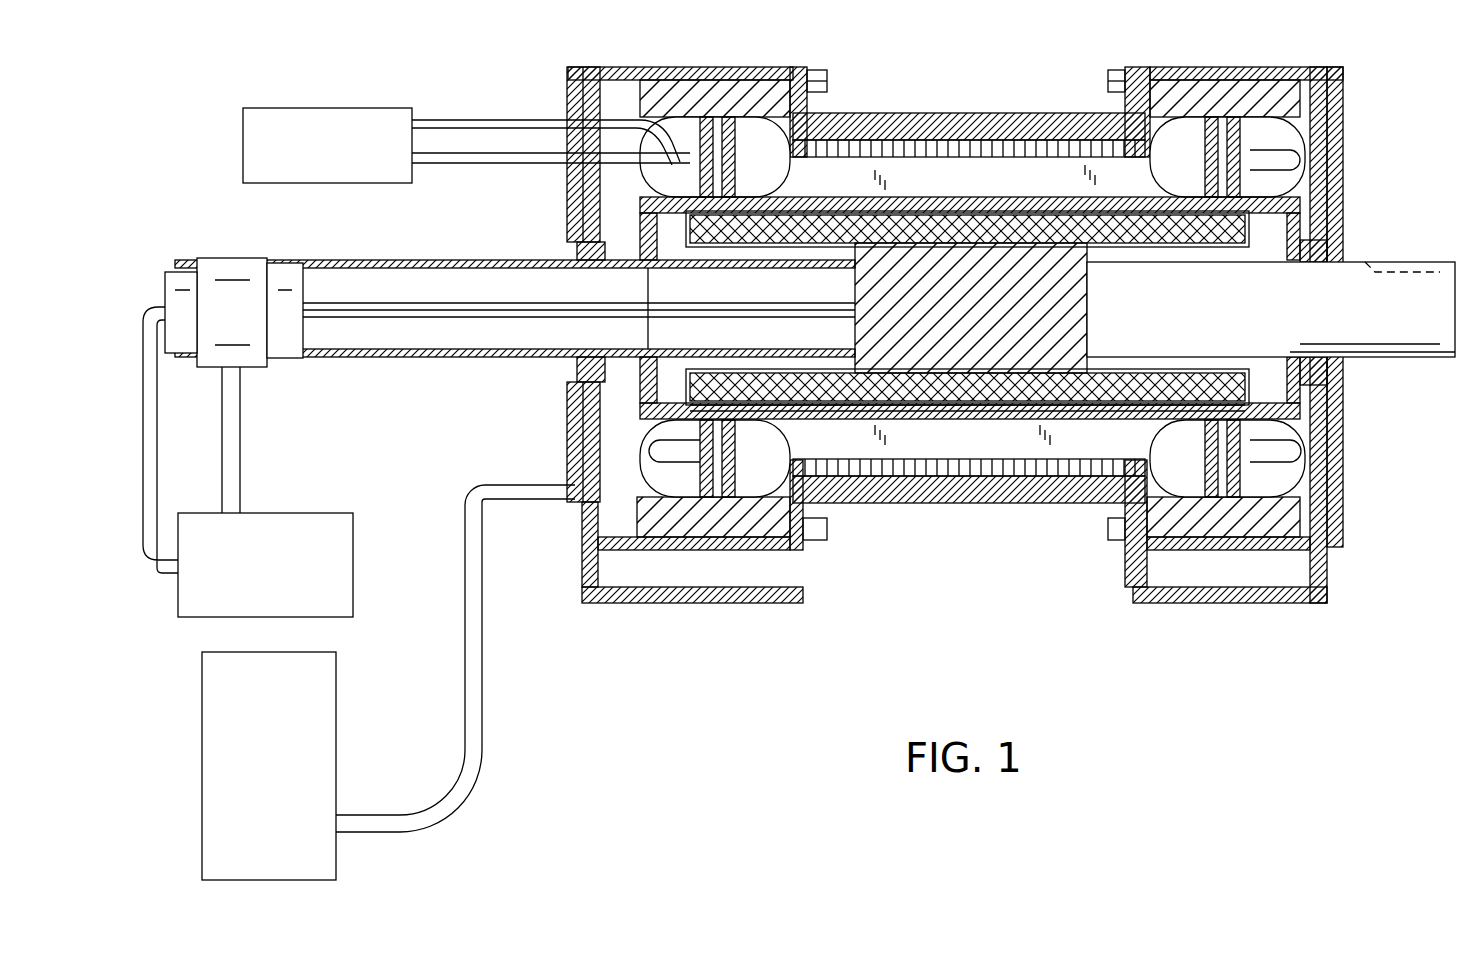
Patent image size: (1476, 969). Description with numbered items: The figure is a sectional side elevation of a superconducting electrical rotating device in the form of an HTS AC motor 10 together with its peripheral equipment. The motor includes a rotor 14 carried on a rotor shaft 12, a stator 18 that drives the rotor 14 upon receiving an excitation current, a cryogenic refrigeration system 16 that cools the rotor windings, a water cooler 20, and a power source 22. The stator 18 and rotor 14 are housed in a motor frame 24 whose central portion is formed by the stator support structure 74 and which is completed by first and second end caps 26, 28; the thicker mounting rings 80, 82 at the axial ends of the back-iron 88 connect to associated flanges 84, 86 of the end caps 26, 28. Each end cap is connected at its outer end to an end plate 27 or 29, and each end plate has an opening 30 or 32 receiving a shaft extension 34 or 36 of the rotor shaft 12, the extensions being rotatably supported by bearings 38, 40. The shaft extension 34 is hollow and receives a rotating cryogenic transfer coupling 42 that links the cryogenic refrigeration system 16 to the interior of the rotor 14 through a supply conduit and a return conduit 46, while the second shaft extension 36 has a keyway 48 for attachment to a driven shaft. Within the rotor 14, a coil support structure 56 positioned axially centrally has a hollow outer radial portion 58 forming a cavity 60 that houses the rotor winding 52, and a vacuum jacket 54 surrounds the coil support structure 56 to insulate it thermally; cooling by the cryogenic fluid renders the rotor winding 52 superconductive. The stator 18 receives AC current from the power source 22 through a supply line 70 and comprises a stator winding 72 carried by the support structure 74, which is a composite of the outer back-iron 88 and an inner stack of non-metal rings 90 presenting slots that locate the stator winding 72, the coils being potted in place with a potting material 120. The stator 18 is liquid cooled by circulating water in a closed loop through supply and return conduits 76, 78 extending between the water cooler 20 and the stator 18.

The HTS AC motor 10 is at (1017, 48).
The rotor shaft 12 is at (435, 378).
The rotor 14 is at (1030, 194).
The cryogenic refrigeration system 16 is at (358, 565).
The stator 18 is at (898, 134).
The water cooler 20 is at (337, 105).
The power source 22 is at (340, 708).
The motor frame 24 is at (640, 62).
The first end cap 26 is at (688, 65).
The first end plate 27 is at (566, 90).
The second end cap 28 is at (1232, 65).
The second end plate 29 is at (1345, 115).
The opening 30 is at (578, 258).
The opening 32 is at (1335, 352).
The shaft extension 34 is at (360, 260).
The second shaft extension 36 is at (1430, 358).
The bearing 38 is at (577, 395).
The bearing 40 is at (1330, 255).
The rotating cryogenic transfer coupling 42 is at (235, 272).
The return conduit 46 is at (240, 440).
The keyway 48 is at (1430, 265).
The rotor winding 52 is at (1235, 240).
The vacuum jacket 54 is at (933, 407).
The coil support structure 56 is at (1060, 320).
The outer radial portion 58 is at (898, 402).
The cavity 60 is at (1100, 382).
The supply line 70 is at (478, 750).
The stator winding 72 is at (955, 192).
The support structure 74 is at (860, 113).
The supply conduit 76 is at (437, 120).
The return conduit 78 is at (480, 165).
The mounting ring 80 is at (815, 65).
The mounting ring 82 is at (1120, 68).
The flange 84 is at (800, 65).
The flange 86 is at (1140, 65).
The back-iron 88 is at (995, 503).
The non-metal rings 90 is at (1078, 478).
The potting material 120 is at (1285, 95).